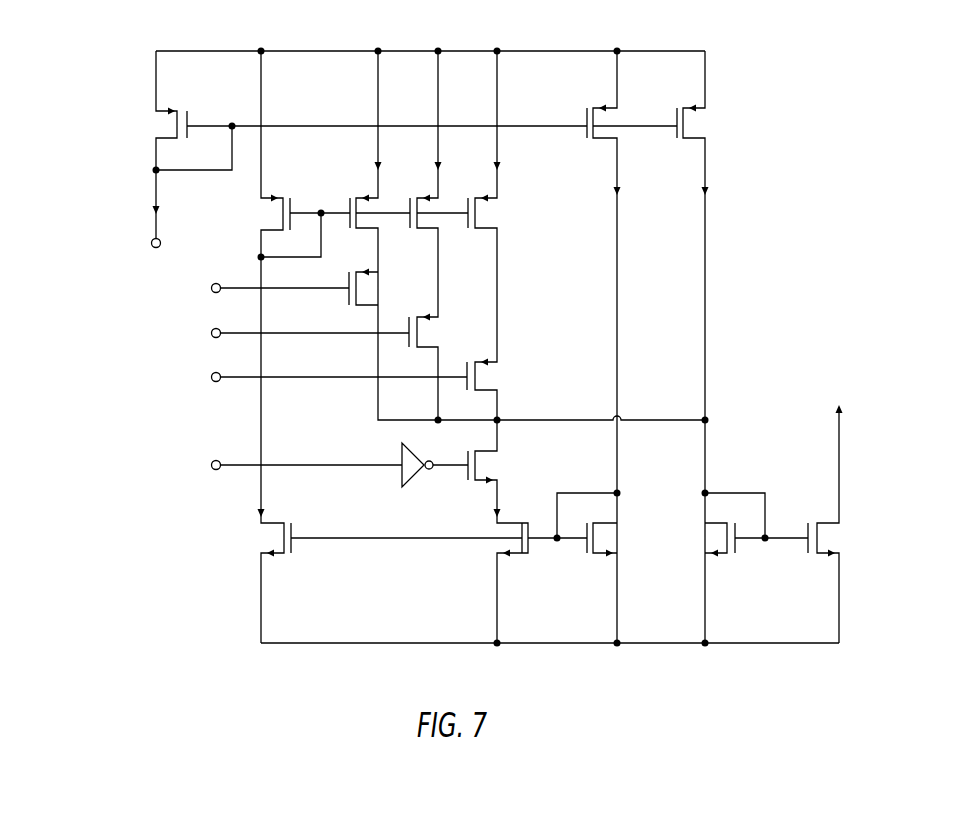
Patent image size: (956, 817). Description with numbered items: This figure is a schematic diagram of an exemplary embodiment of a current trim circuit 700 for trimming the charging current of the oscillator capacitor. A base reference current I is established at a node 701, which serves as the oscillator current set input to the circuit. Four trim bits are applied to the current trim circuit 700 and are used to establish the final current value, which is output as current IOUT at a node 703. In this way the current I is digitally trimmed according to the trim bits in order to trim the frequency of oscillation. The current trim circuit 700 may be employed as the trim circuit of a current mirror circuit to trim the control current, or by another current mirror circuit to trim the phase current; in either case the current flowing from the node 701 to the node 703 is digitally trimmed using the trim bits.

The current trim circuit 700 is at (441, 331).
The node 701 is at (165, 235).
The node 703 is at (838, 478).